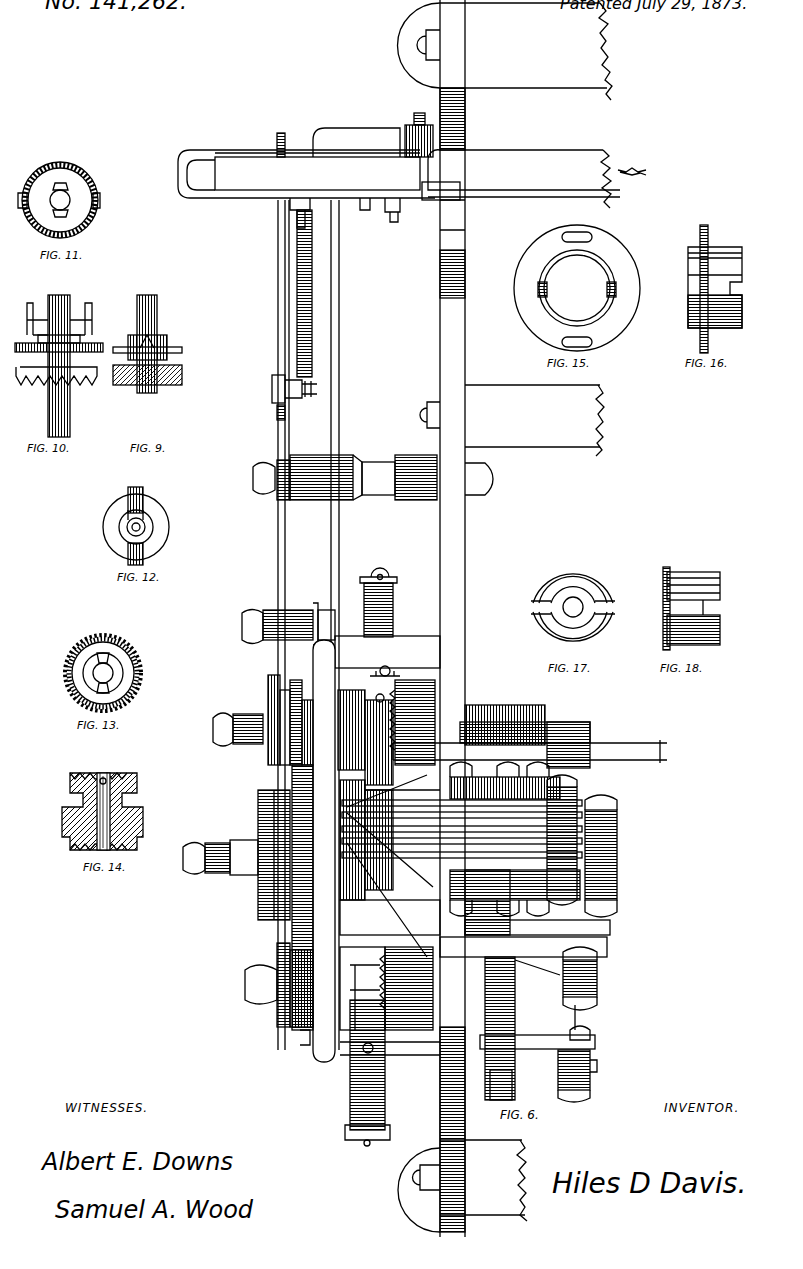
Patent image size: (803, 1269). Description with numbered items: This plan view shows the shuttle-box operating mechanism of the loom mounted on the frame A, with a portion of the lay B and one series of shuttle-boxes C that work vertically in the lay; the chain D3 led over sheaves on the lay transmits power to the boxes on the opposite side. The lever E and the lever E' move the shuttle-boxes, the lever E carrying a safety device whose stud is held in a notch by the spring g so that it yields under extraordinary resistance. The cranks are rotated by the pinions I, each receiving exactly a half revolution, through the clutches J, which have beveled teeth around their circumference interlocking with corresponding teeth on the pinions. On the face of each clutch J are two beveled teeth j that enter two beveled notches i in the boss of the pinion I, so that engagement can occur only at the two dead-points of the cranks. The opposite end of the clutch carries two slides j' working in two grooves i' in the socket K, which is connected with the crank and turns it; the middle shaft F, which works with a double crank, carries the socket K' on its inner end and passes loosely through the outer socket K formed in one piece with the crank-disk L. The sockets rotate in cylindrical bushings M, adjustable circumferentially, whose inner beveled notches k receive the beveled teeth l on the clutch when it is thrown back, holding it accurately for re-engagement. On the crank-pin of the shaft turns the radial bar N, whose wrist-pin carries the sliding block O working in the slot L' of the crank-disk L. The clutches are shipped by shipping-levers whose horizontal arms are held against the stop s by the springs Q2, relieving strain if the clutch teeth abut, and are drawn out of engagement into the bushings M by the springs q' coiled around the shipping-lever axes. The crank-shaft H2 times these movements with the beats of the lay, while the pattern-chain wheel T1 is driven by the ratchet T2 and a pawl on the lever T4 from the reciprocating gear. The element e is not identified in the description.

In FIG. 6, the frame of the loom A is at (505, 618).
In FIG. 6, the lay B is at (521, 179).
In FIG. 6, the shuttle-box C is at (306, 170).
In FIG. 6, the chain D3 is at (638, 164).
In FIG. 6, the lever E is at (290, 625).
In FIG. 6, the lever E' is at (343, 625).
In FIG. 6, the spring g is at (308, 293).
In FIG. 6, the spring q' is at (375, 857).
In FIG. 6, the middle shaft F is at (290, 720).
In FIG. 6, the beveled teeth l is at (379, 742).
In FIG. 10, the beveled teeth l is at (56, 330).
In FIG. 9, the beveled teeth l is at (147, 342).
In FIG. 12, the beveled teeth l is at (138, 522).
In FIG. 6, the pinion I is at (407, 855).
In FIG. 13, the pinion I is at (108, 673).
In FIG. 14, the pinion I is at (105, 811).
In FIG. 6, the spring Q2 is at (389, 852).
In FIG. 6, the crank-shaft H2 is at (530, 736).
In FIG. 6, the stop s is at (401, 886).
In FIG. 6, the lever e is at (379, 840).
In FIG. 6, the lever T4 is at (532, 866).
In FIG. 6, the wheel T1 is at (534, 1028).
In FIG. 6, the ratchet T2 is at (556, 1024).
In FIG. 6, the crank-disk L is at (274, 855).
In FIG. 6, the radial bar N is at (220, 848).
In FIG. 6, the slot L' is at (279, 988).
In FIG. 6, the sliding block O is at (365, 988).
In FIG. 11, the clutch J is at (59, 200).
In FIG. 10, the clutch J is at (53, 366).
In FIG. 9, the clutch J is at (151, 344).
In FIG. 12, the clutch J is at (136, 527).
In FIG. 11, the beveled teeth j is at (59, 197).
In FIG. 9, the beveled teeth j is at (141, 318).
In FIG. 10, the slides j' is at (58, 316).
In FIG. 12, the beveled notches i is at (132, 532).
In FIG. 13, the beveled notches i is at (103, 673).
In FIG. 14, the beveled notches i is at (103, 804).
In FIG. 17, the beveled notches i is at (537, 607).
In FIG. 18, the beveled notches i is at (690, 607).
In FIG. 17, the grooves i' is at (608, 607).
In FIG. 15, the cylindrical bushing M is at (616, 257).
In FIG. 16, the cylindrical bushing M is at (715, 289).
In FIG. 15, the beveled notches k is at (576, 289).
In FIG. 16, the beveled notches k is at (749, 289).
In FIG. 17, the socket K is at (575, 603).
In FIG. 18, the socket K' is at (701, 608).